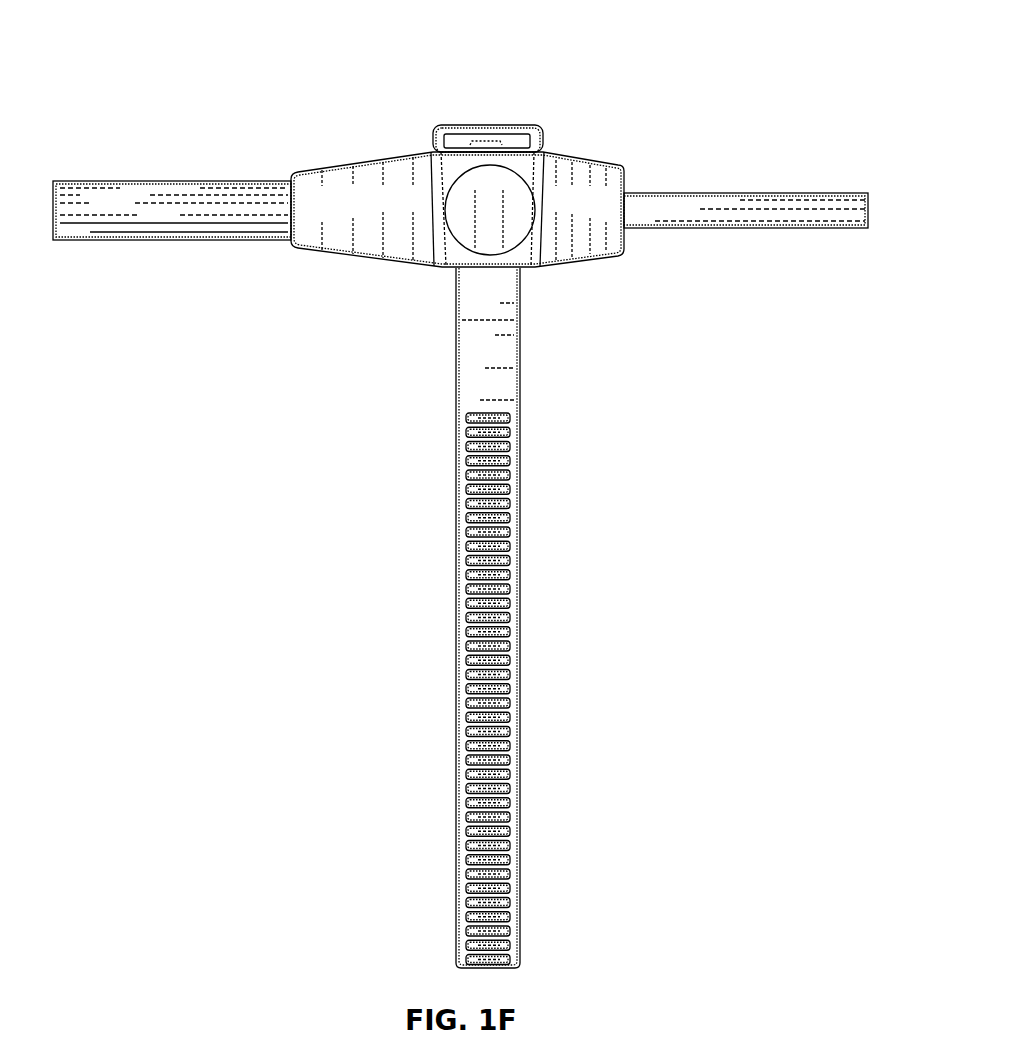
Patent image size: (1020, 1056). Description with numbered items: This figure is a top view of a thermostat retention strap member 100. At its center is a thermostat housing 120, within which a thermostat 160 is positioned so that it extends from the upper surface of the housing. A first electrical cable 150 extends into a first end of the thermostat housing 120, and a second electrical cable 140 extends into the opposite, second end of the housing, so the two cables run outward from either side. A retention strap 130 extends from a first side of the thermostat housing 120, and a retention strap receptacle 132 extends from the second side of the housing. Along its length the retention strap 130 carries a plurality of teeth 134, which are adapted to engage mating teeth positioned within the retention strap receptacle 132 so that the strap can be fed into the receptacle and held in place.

The thermostat retention strap member 100 is at (741, 68).
The thermostat housing 120 is at (608, 183).
The retention strap 130 is at (507, 350).
The retention strap receptacle 132 is at (490, 126).
The teeth 134 is at (500, 688).
The second electrical cable 140 is at (183, 218).
The first electrical cable 150 is at (770, 218).
The thermostat 160 is at (527, 204).